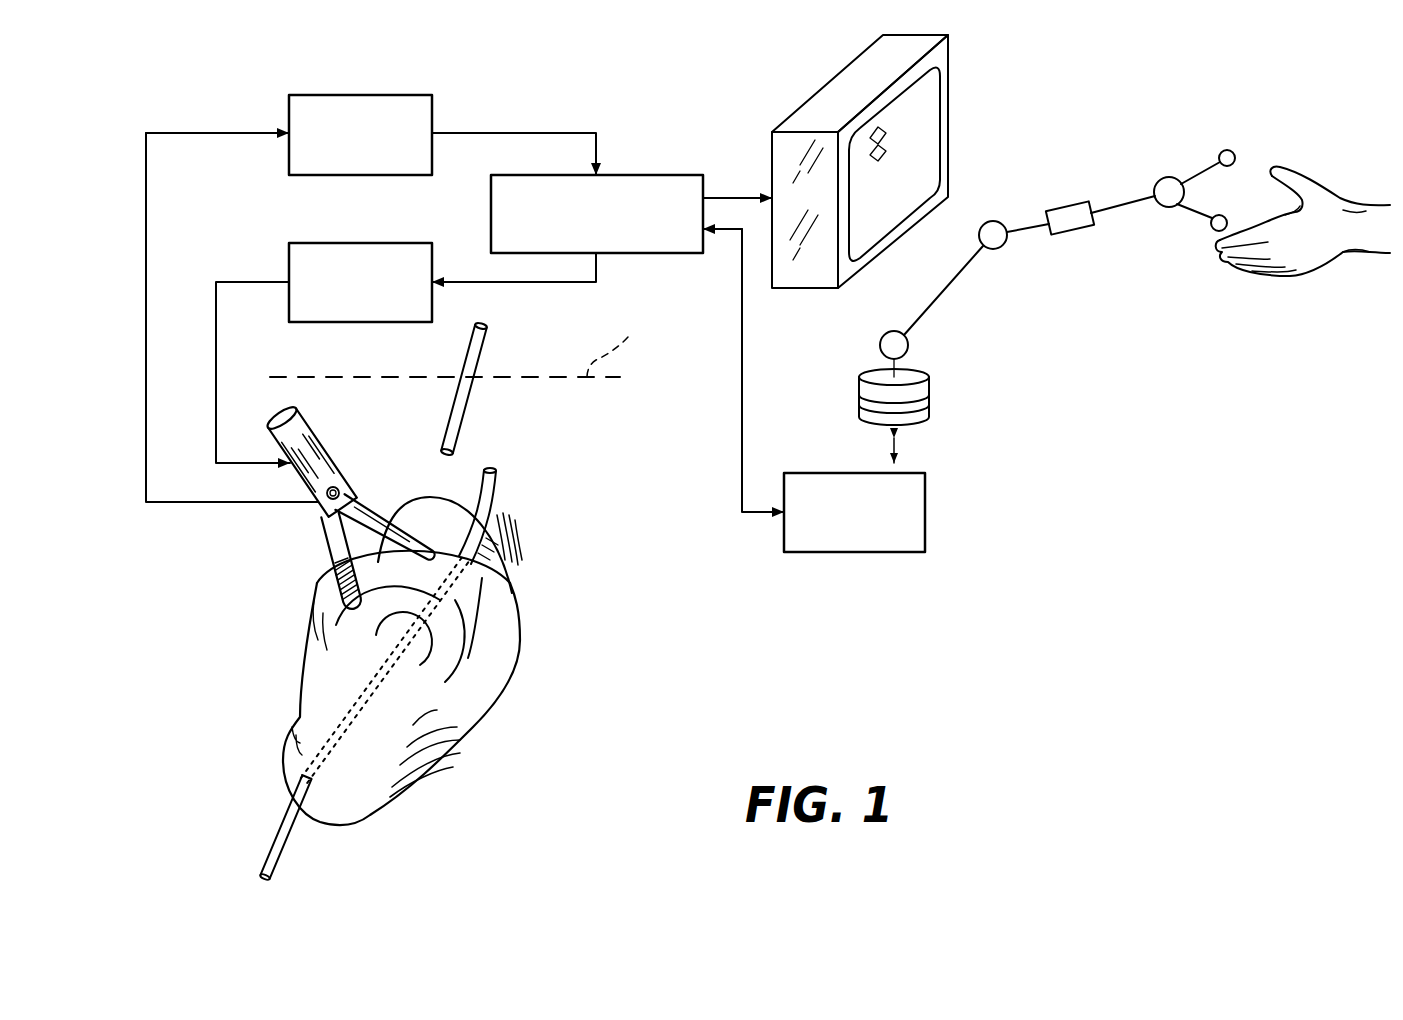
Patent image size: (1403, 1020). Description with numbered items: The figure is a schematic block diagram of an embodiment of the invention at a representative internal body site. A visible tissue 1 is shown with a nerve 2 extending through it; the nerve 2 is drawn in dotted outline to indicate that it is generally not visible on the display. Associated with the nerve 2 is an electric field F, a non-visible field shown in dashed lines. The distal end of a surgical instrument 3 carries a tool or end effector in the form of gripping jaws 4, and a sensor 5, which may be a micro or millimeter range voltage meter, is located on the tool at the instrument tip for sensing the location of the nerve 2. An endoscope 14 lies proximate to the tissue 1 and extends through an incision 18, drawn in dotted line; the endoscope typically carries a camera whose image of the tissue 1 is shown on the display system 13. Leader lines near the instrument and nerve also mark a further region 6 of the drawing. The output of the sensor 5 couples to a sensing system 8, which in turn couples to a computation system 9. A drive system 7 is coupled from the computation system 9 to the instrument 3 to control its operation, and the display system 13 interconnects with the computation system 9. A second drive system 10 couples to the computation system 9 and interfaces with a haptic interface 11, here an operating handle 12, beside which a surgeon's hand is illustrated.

The tissue 1 is at (510, 653).
The nerve 2 is at (497, 492).
The surgical instrument 3 is at (297, 424).
The gripping jaws 4 is at (382, 521).
The sensor 5 is at (350, 590).
The tissue 6 is at (512, 540).
The drive system 7 is at (433, 298).
The sensing system 8 is at (433, 104).
The computation system 9 is at (665, 175).
The second drive system 10 is at (926, 510).
The haptic interface 11 is at (1032, 360).
The operating handle 12 is at (1169, 207).
The display system 13 is at (950, 128).
The endoscope 14 is at (484, 352).
The incision 18 is at (570, 380).
The electric field F is at (517, 522).